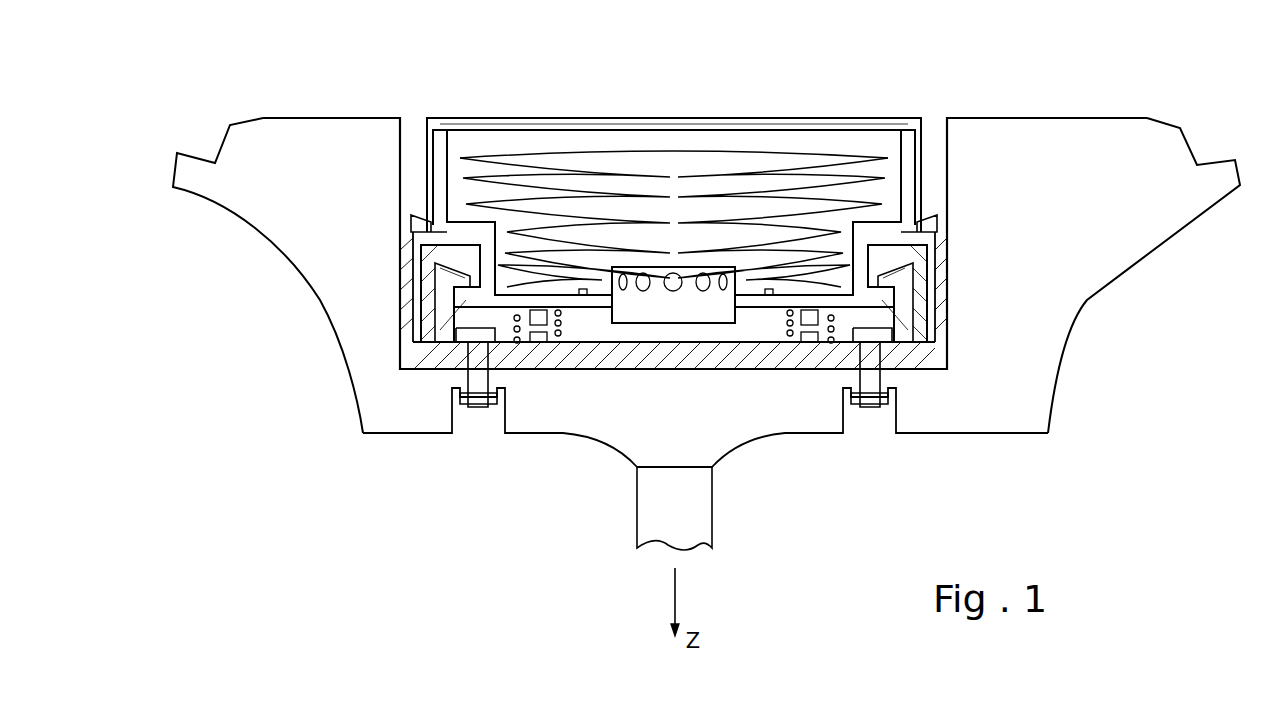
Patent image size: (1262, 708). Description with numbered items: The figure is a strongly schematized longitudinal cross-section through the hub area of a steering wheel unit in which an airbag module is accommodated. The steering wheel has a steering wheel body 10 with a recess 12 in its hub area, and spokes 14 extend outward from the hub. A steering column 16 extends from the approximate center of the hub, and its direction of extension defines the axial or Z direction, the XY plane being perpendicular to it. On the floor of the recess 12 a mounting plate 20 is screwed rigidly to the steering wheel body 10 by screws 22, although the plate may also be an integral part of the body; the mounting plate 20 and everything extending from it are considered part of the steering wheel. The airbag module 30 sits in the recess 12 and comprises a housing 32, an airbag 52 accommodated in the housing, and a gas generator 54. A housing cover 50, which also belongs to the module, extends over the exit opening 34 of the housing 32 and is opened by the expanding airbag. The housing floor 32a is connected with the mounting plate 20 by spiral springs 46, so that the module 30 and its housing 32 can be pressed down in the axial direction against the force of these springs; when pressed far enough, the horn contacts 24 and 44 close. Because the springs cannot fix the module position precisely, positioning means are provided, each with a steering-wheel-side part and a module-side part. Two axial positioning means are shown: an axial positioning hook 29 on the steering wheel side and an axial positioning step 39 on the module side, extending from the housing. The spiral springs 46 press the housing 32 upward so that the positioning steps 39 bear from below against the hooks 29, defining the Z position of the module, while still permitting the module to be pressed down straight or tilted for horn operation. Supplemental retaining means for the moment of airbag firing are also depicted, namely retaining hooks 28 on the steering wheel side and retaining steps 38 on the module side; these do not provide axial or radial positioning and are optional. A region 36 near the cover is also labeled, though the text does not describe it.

The steering wheel body 10 is at (1037, 327).
The recess 12 is at (932, 133).
The spokes 14 is at (237, 173).
The steering column 16 is at (683, 507).
The mounting plate 20 is at (737, 365).
The screws 22 is at (478, 410).
The horn contact 24 is at (538, 337).
The retaining hooks 28 is at (445, 312).
The axial positioning hook 29 is at (410, 290).
The airbag module 30 is at (507, 143).
The housing 32 is at (863, 233).
The housing floor 32a is at (757, 310).
The exit opening 34 is at (633, 138).
The gap between cover and housing 36 is at (907, 168).
The retaining steps 38 is at (470, 300).
The axial positioning step 39 is at (415, 232).
The horn contact 44 is at (538, 312).
The spiral springs 46 is at (517, 312).
The housing cover 50 is at (600, 124).
The airbag 52 is at (710, 177).
The gas generator 54 is at (655, 312).